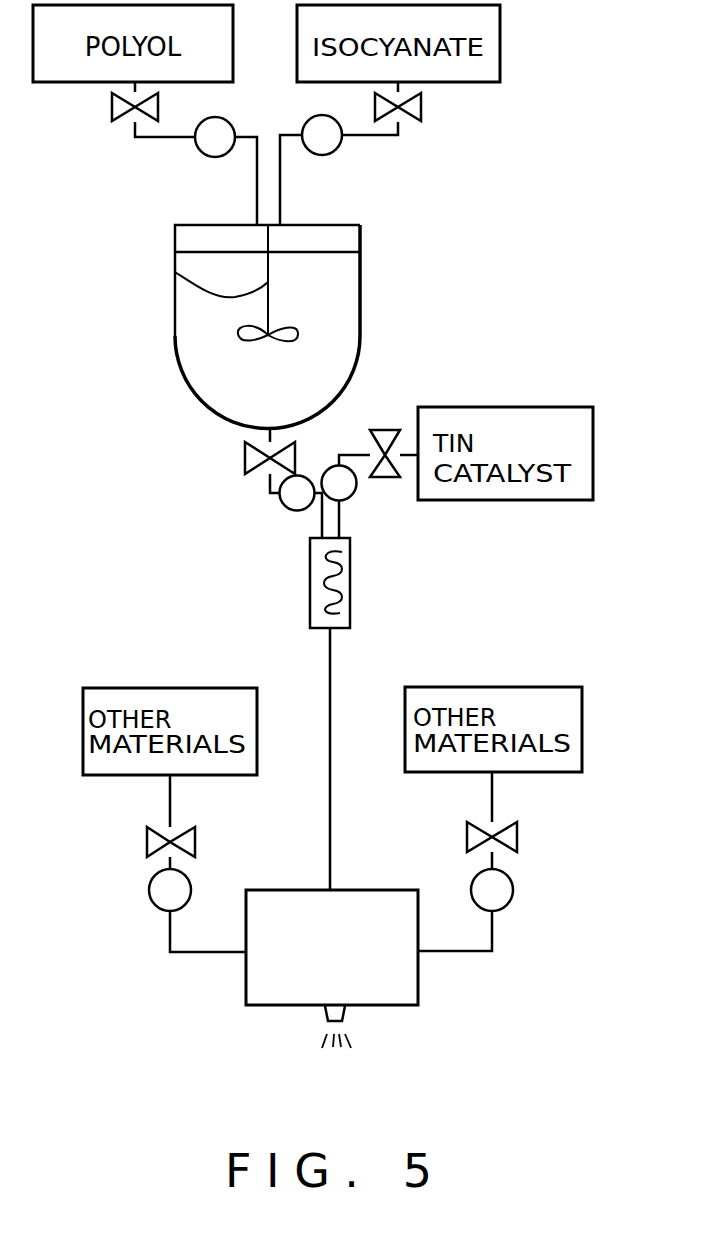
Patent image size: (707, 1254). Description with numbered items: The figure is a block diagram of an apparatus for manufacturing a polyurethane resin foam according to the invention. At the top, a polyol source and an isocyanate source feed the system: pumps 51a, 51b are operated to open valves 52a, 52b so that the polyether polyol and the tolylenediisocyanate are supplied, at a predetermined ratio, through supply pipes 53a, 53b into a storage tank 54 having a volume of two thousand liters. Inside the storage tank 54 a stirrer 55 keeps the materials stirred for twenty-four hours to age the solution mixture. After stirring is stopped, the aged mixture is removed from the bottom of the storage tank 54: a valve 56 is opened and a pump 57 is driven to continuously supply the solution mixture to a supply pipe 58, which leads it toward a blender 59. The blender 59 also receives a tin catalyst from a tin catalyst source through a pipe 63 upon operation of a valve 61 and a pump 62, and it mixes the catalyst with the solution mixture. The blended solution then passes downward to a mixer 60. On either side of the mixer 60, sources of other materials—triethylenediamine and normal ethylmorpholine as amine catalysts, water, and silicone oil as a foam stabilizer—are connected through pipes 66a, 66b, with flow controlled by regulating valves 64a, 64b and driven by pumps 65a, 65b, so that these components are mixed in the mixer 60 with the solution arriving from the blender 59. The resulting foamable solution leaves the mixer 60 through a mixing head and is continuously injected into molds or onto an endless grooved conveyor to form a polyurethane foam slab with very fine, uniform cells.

The pump 51a is at (200, 152).
The pump 51b is at (338, 150).
The valve 52a is at (113, 112).
The valve 52b is at (425, 110).
The supply pipe 53a is at (257, 200).
The supply pipe 53b is at (281, 198).
The storage tank 54 is at (361, 315).
The stirrer 55 is at (175, 272).
The valve 56 is at (245, 460).
The pump 57 is at (298, 512).
The supply pipe 58 is at (270, 496).
The blender 59 is at (351, 612).
The mixer 60 is at (390, 890).
The valve 61 is at (386, 430).
The pump 62 is at (352, 496).
The pipe 63 is at (340, 456).
The regulating valve 64a is at (196, 842).
The regulating valve 64b is at (518, 838).
The pump 65a is at (154, 905).
The pump 65b is at (510, 900).
The pipe 66a is at (180, 954).
The pipe 66b is at (470, 954).